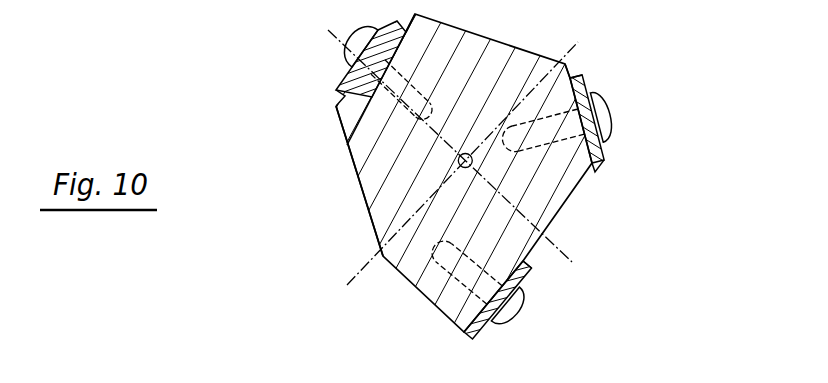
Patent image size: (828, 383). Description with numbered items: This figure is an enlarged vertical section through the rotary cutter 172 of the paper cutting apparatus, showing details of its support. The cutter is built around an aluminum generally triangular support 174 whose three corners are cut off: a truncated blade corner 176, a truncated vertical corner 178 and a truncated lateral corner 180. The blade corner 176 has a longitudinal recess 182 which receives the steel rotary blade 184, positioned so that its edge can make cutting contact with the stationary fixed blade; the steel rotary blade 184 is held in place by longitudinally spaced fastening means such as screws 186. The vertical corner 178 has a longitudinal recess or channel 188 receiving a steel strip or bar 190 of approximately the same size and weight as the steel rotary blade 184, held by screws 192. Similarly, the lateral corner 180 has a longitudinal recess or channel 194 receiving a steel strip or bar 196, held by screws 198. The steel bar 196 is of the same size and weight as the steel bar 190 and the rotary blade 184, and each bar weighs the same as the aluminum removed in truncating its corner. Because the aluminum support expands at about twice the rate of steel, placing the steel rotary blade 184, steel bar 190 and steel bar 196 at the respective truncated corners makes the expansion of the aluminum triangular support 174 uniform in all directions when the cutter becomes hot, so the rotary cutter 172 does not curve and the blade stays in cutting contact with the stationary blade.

The rotary cutter 172 is at (628, 86).
The aluminum generally triangular support 174 is at (512, 44).
The truncated blade corner 176 is at (533, 263).
The truncated vertical corner 178 is at (335, 104).
The truncated lateral corner 180 is at (571, 77).
The longitudinal recess 182 is at (531, 275).
The steel rotary blade 184 is at (466, 335).
The screws 186 is at (516, 317).
The longitudinal recess or channel 188 is at (394, 22).
The steel strip or bar 190 is at (336, 88).
The screws 192 is at (347, 50).
The longitudinal recess or channel 194 is at (604, 162).
The steel strip or bar 196 is at (606, 86).
The screws 198 is at (612, 120).